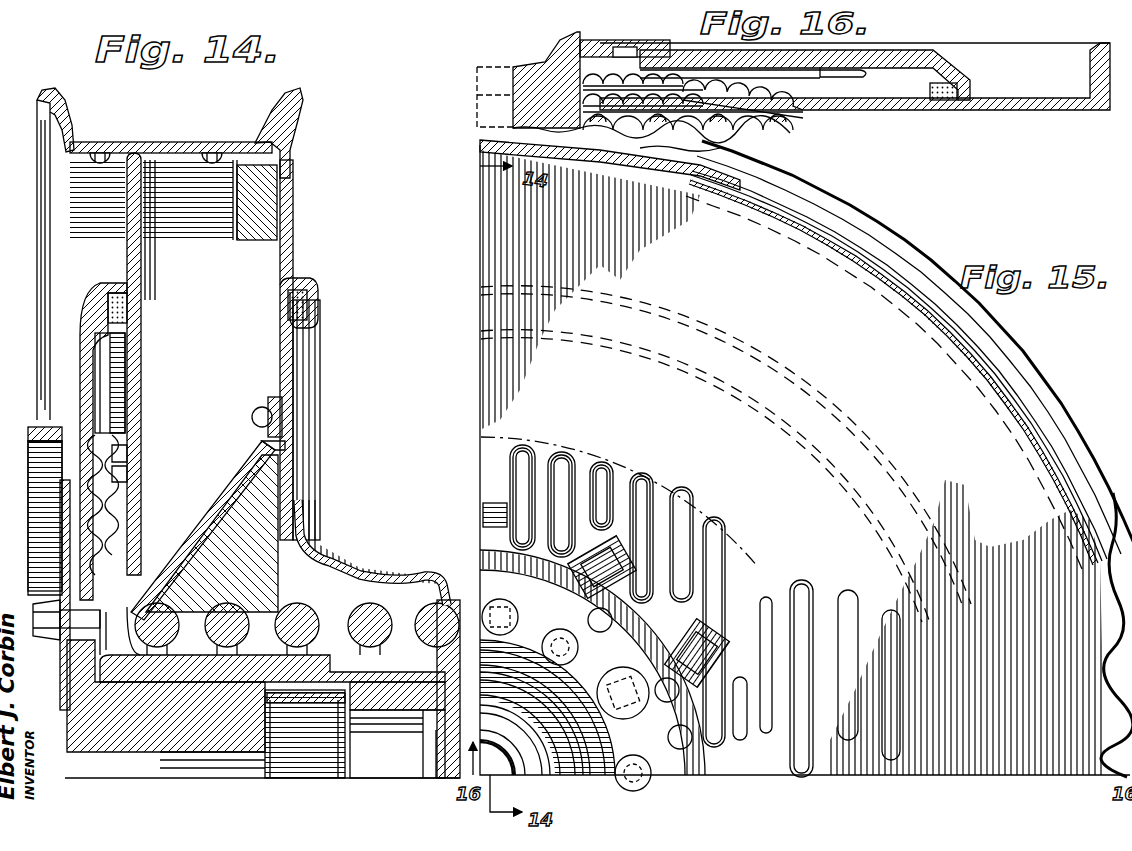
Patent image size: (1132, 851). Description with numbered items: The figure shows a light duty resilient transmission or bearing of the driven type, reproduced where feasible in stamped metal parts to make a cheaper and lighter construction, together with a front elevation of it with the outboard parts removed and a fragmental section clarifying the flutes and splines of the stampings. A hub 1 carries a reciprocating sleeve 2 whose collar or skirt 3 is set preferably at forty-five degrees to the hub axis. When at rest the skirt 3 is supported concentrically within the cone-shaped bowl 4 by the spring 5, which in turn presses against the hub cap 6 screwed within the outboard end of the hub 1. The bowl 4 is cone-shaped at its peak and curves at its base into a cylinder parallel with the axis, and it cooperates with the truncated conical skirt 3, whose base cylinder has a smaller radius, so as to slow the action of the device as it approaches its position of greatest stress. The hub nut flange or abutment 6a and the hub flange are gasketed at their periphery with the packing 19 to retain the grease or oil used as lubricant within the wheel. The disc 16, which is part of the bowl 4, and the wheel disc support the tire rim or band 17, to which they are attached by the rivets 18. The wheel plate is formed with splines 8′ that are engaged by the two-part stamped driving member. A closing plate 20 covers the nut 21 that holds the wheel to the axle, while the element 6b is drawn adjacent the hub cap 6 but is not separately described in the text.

In FIG. 14, the hub 1 is at (67, 672).
In FIG. 16, the hub 1 is at (582, 50).
In FIG. 15, the hub 1 is at (572, 770).
In FIG. 14, the sleeve 2 is at (252, 655).
In FIG. 14, the collar or skirt 3 is at (175, 560).
In FIG. 14, the cone-shaped bowl 4 is at (225, 500).
In FIG. 14, the spring 5 is at (230, 612).
In FIG. 14, the hub cap 6 is at (443, 586).
In FIG. 14, the hub nut flange or abutment 6a is at (282, 420).
In FIG. 14, the flange extension 6b is at (473, 600).
In FIG. 15, the splines 8′ is at (730, 515).
In FIG. 14, the disc 16 is at (280, 312).
In FIG. 14, the tire rim or band 17 is at (161, 142).
In FIG. 15, the tire rim or band 17 is at (1043, 383).
In FIG. 14, the rivets 18 is at (100, 150).
In FIG. 14, the packing 19 is at (127, 308).
In FIG. 16, the packing 19 is at (948, 102).
In FIG. 15, the packing 19 is at (790, 370).
In FIG. 14, the closing plate 20 is at (450, 760).
In FIG. 14, the nut 21 is at (297, 742).
In FIG. 15, the nut 21 is at (528, 770).